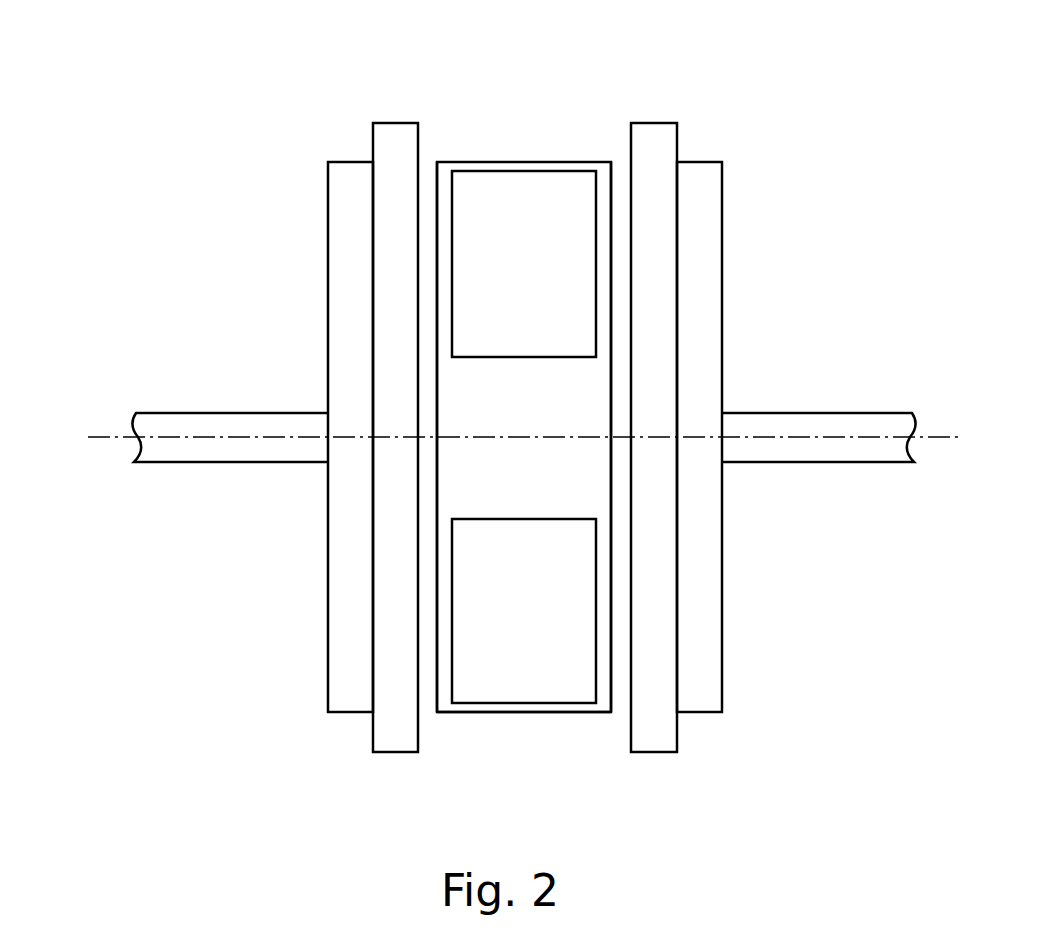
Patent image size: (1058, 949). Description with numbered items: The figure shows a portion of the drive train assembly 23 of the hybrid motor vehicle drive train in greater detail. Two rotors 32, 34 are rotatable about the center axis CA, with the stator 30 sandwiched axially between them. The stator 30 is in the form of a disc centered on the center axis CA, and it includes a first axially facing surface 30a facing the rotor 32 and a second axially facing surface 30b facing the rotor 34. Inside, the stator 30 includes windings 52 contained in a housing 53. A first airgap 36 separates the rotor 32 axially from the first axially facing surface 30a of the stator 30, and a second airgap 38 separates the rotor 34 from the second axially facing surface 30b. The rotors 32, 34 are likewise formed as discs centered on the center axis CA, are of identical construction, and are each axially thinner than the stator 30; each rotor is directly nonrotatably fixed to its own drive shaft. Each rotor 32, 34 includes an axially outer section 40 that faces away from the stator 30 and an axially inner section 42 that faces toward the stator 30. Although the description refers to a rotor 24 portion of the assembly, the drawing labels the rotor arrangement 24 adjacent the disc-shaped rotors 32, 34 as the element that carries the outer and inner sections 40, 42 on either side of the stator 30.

The drive train assembly 23 is at (855, 157).
The rotor 24 is at (516, 411).
The stator 30 is at (531, 413).
The first axially facing surface 30a is at (437, 218).
The second axially facing surface 30b is at (611, 218).
The rotor 32 is at (368, 112).
The rotor 34 is at (685, 110).
The first airgap 36 is at (219, 425).
The second airgap 38 is at (857, 427).
The axially outer section 40 is at (343, 260).
The axially inner section 42 is at (392, 112).
The windings 52 is at (524, 437).
The housing 53 is at (485, 718).
The center axis CA is at (103, 435).